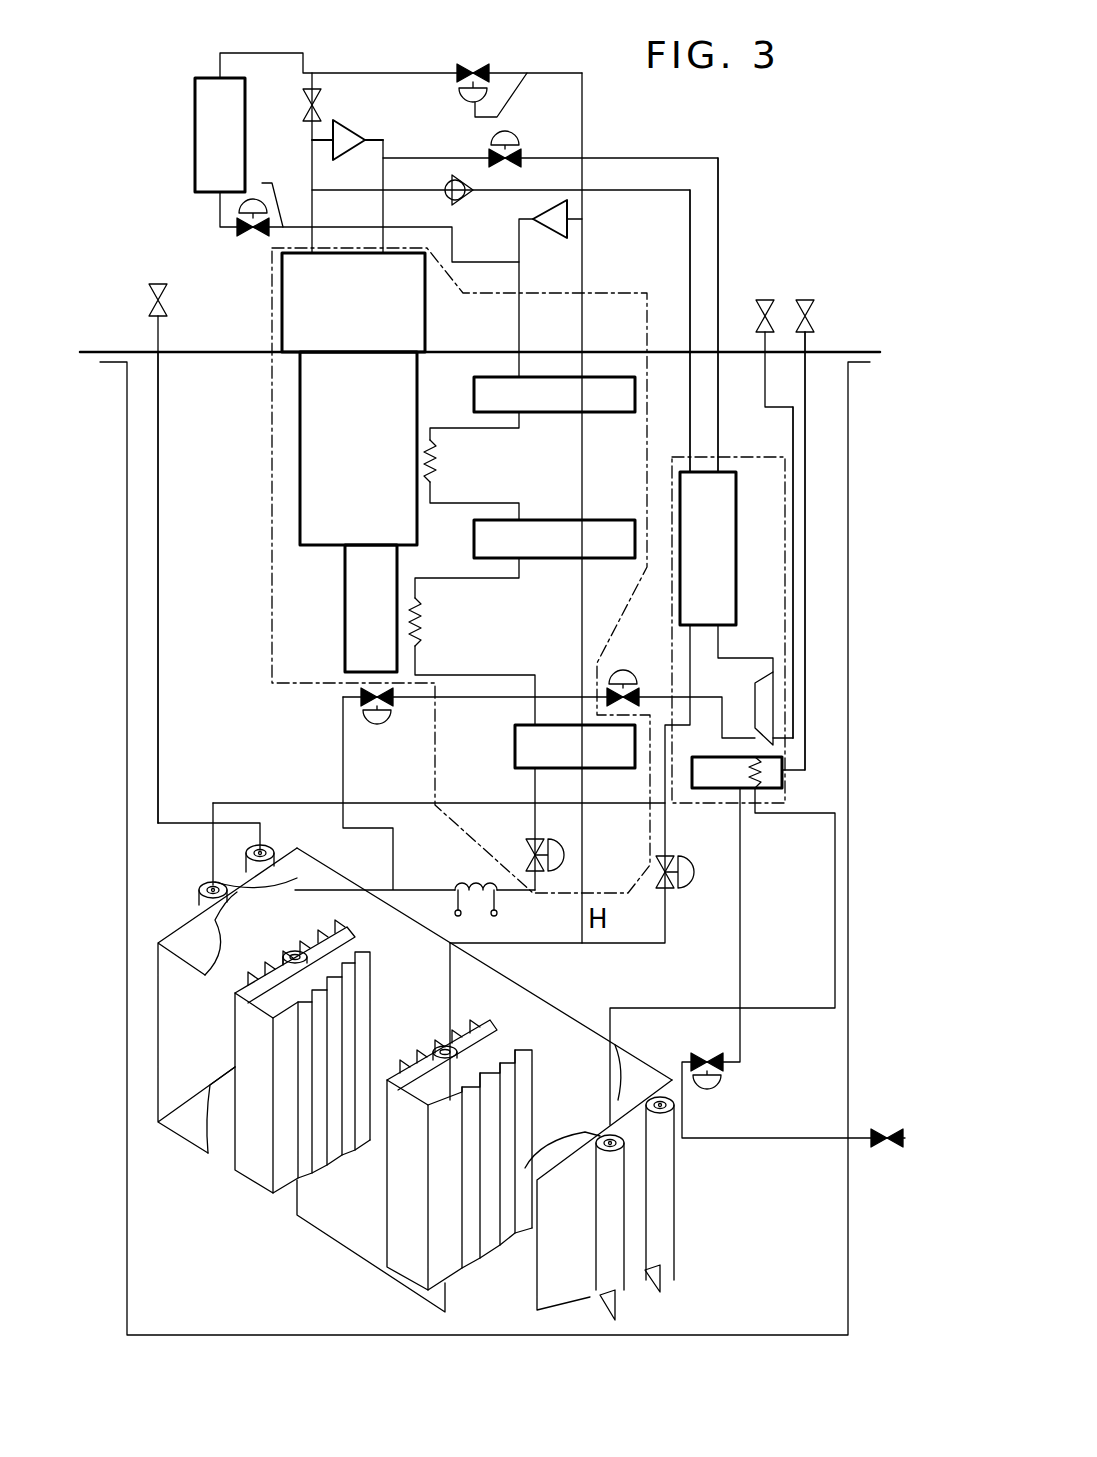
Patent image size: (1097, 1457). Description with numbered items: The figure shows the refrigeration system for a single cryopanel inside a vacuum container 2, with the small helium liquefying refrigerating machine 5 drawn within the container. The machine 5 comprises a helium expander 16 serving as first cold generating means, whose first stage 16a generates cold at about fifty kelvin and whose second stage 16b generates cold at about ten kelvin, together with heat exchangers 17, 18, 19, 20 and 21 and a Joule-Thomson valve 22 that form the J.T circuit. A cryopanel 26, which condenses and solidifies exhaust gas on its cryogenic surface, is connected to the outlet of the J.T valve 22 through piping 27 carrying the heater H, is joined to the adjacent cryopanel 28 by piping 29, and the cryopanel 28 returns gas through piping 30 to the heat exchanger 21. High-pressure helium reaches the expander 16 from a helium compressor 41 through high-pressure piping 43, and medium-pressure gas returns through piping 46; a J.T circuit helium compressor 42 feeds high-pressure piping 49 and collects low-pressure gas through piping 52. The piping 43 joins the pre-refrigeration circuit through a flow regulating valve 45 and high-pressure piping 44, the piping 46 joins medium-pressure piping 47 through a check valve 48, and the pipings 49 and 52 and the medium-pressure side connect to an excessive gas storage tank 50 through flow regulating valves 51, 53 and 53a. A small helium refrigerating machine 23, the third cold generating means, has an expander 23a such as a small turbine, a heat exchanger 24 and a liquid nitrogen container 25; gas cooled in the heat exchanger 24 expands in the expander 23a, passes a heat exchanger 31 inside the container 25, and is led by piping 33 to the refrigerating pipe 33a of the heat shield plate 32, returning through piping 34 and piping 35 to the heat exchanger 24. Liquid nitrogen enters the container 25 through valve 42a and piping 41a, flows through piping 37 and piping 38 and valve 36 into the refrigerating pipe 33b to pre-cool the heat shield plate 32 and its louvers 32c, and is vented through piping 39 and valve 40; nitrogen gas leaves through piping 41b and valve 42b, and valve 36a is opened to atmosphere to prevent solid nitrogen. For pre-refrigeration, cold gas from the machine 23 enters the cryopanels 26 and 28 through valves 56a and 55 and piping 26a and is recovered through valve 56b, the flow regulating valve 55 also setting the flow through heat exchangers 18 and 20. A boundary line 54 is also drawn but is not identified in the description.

The vacuum container 2 is at (848, 1262).
The small helium liquefying refrigerating machine 5 is at (272, 417).
The helium expander 16 is at (282, 312).
The first stage 16a is at (318, 560).
The second stage 16b is at (345, 658).
The heat exchanger 17 is at (550, 412).
The heat exchanger 18 is at (440, 458).
The heat exchanger 19 is at (550, 558).
The heat exchanger 20 is at (418, 628).
The heat exchanger 21 is at (515, 755).
The Joule-Thomson valve 22 is at (528, 847).
The small helium refrigerating machine 23 is at (786, 602).
The expander 23a is at (773, 703).
The heat exchanger 24 is at (736, 585).
The liquid nitrogen container 25 is at (782, 775).
The cryopanel 26 is at (345, 928).
The piping 26a is at (343, 716).
The piping 27 is at (418, 888).
The cryopanel 28 is at (490, 1022).
The piping 29 is at (332, 1238).
The piping 30 is at (585, 860).
The heat exchanger 31 is at (738, 805).
The heat shield plate 32 is at (520, 985).
The louvers 32c is at (235, 1045).
The piping 33 is at (835, 885).
The refrigerating pipe 33a is at (210, 884).
The refrigerating pipe 33b is at (266, 846).
The piping 34 is at (357, 1172).
The piping 35 is at (257, 803).
The valve 36 is at (718, 1078).
The valve 36a is at (887, 1150).
The piping 37 is at (740, 1048).
The piping 38 is at (380, 1090).
The piping 39 is at (158, 632).
The valve 40 is at (155, 304).
The helium compressor 41 is at (358, 160).
The piping 41a is at (805, 485).
The piping 41b is at (792, 449).
The J.T circuit helium compressor 42 is at (555, 238).
The valve 42a is at (805, 298).
The valve 42b is at (765, 298).
The high-pressure piping 43 is at (383, 150).
The high-pressure piping 44 is at (718, 192).
The flow regulating valve 45 is at (520, 132).
The medium-pressure piping 46 is at (311, 144).
The medium-pressure piping 47 is at (688, 272).
The check valve 48 is at (468, 198).
The high-pressure piping 49 is at (522, 298).
The excessive gas storage tank 50 is at (195, 174).
The flow regulating valve 51 is at (240, 237).
The low-pressure piping 52 is at (585, 298).
The flow regulating valve 53 is at (482, 74).
The flow regulating valve 53a is at (318, 103).
The boundary line 54 is at (445, 283).
The flow regulating valve 55 is at (377, 726).
The valve 56a is at (637, 682).
The valve 56b is at (692, 890).